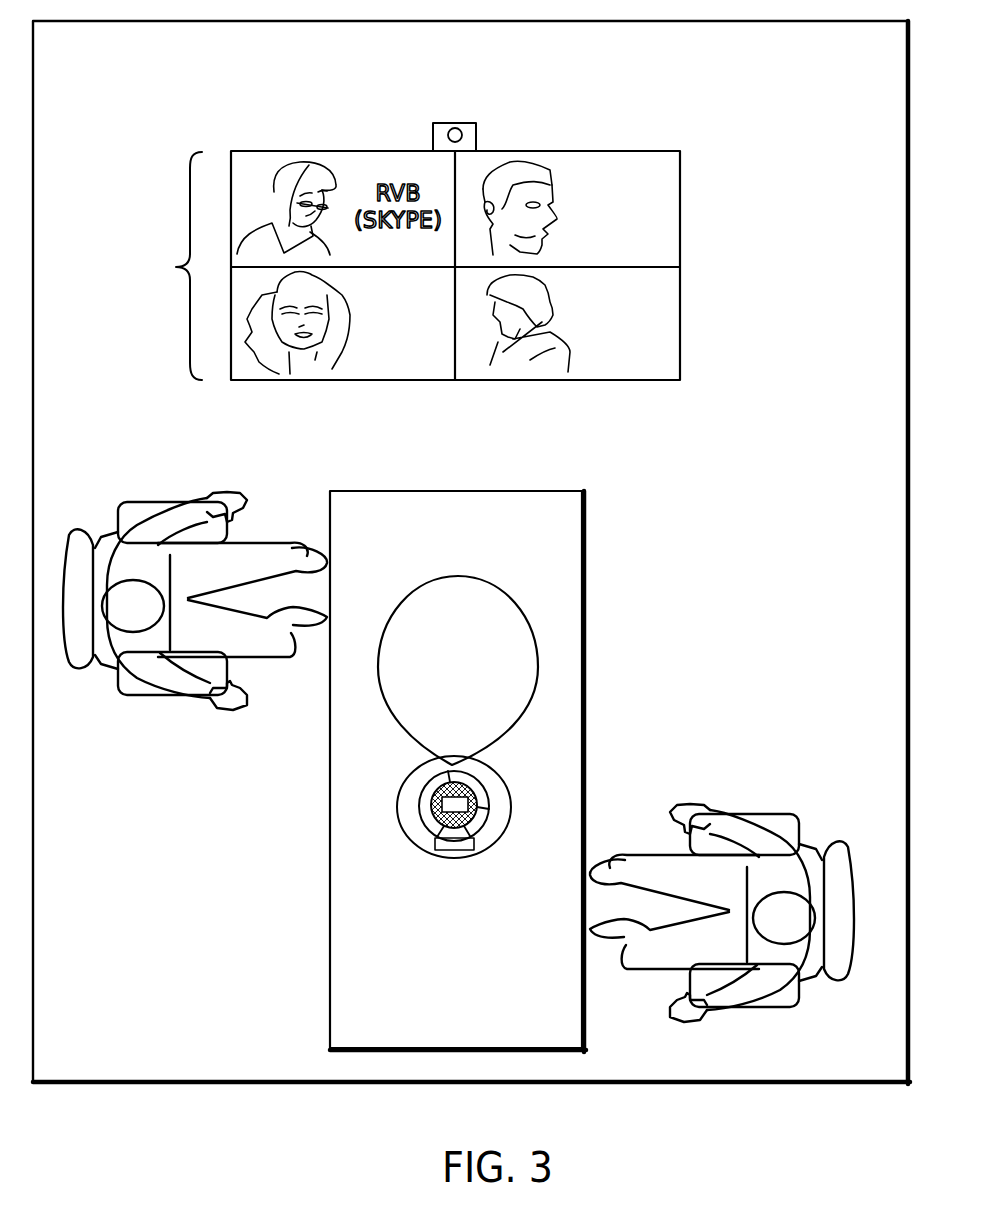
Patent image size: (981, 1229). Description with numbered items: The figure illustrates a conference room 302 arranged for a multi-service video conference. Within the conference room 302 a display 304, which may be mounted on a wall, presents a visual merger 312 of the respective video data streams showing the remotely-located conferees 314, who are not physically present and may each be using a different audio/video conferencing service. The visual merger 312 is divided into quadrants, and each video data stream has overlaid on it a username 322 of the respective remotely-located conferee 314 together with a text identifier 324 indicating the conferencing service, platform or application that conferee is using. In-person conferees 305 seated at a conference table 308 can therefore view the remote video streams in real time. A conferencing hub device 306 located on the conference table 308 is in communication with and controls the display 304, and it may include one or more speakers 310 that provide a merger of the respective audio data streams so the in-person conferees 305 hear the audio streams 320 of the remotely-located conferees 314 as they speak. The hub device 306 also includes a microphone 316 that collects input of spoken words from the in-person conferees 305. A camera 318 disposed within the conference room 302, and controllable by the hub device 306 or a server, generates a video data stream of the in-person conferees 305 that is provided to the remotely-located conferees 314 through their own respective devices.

The conference room 302 is at (805, 87).
The display 304 is at (296, 151).
The in-person conferees 305 is at (177, 697).
The conferencing hub device 306 is at (450, 832).
The conference table 308 is at (585, 738).
The speakers 310 is at (453, 858).
The visual merger 312 is at (615, 151).
The remotely-located conferees 314 is at (161, 266).
The microphone 316 is at (432, 802).
The camera 318 is at (455, 123).
The audio streams 320 is at (427, 585).
The username 322 is at (615, 380).
The text identifier 324 is at (296, 380).